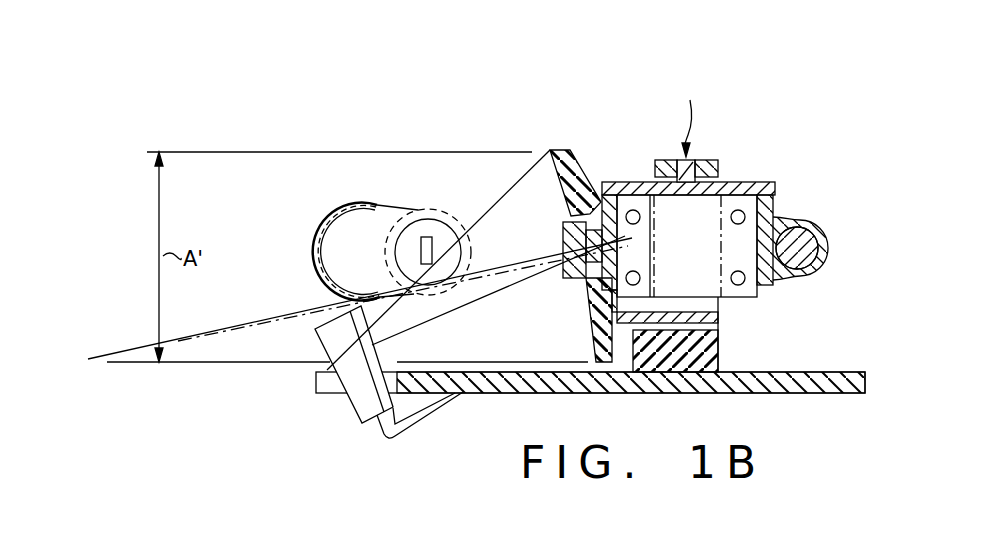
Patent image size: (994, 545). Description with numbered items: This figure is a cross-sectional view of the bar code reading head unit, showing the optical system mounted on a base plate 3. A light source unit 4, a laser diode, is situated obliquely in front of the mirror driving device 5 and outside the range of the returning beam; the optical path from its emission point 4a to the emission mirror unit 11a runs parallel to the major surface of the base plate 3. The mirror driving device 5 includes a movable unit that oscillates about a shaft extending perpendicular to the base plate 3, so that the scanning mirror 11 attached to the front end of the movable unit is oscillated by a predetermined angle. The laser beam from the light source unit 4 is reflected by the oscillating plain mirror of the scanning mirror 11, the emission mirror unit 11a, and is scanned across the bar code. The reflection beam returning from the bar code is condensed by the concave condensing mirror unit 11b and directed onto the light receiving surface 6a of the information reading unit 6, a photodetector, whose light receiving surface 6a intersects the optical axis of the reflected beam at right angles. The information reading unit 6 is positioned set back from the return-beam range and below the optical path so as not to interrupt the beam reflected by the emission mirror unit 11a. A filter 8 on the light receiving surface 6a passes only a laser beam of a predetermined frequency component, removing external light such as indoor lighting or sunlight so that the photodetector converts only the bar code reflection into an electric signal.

The base plate 3 is at (813, 368).
The light source unit 4 is at (390, 214).
The emission point 4a is at (433, 232).
The mirror driving device 5 is at (743, 167).
The information reading unit 6 is at (358, 406).
The light receiving surface 6a is at (360, 298).
The filter 8 is at (385, 351).
The scanning mirror 11 is at (572, 185).
The emission mirror unit 11a is at (566, 272).
The condensing mirror unit 11b is at (552, 178).